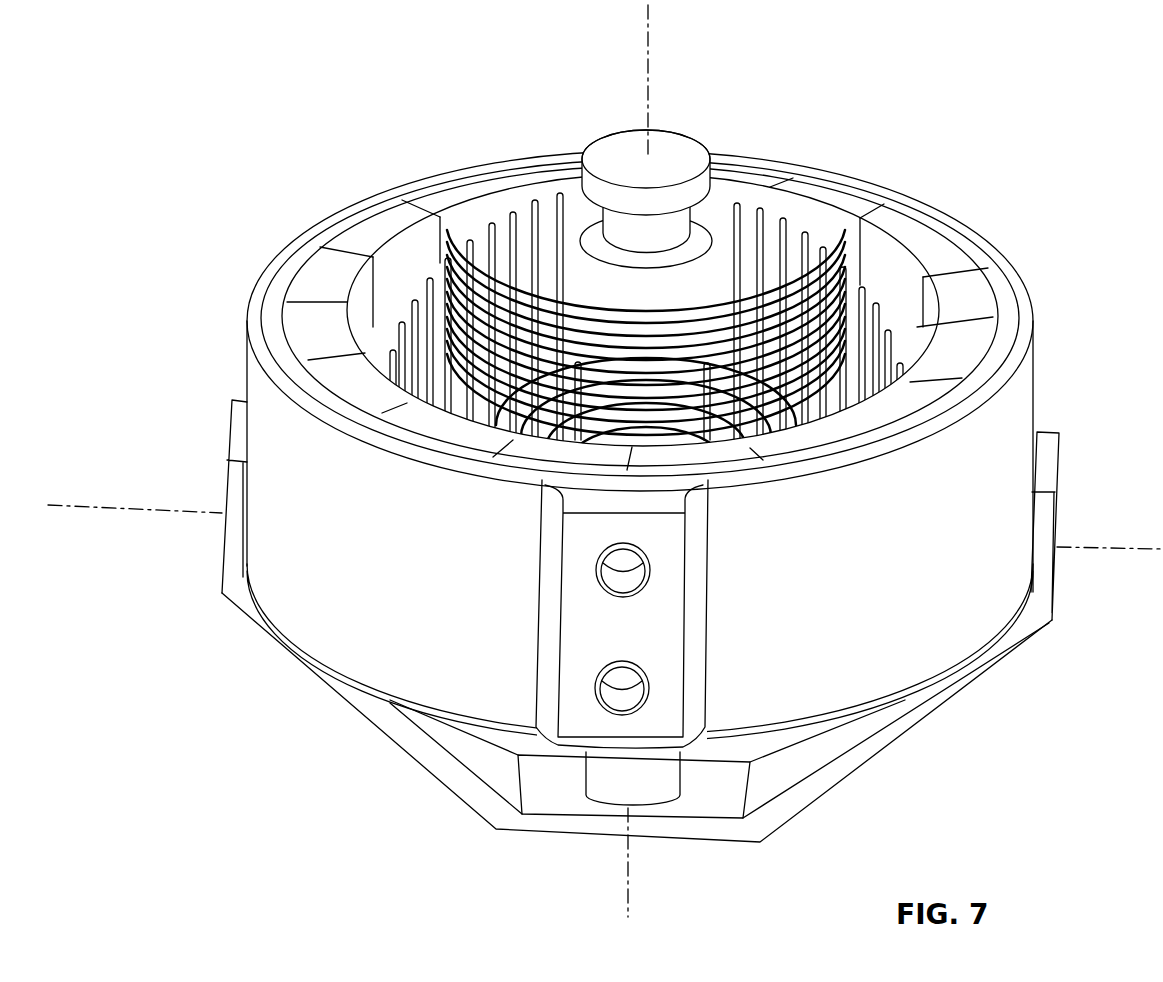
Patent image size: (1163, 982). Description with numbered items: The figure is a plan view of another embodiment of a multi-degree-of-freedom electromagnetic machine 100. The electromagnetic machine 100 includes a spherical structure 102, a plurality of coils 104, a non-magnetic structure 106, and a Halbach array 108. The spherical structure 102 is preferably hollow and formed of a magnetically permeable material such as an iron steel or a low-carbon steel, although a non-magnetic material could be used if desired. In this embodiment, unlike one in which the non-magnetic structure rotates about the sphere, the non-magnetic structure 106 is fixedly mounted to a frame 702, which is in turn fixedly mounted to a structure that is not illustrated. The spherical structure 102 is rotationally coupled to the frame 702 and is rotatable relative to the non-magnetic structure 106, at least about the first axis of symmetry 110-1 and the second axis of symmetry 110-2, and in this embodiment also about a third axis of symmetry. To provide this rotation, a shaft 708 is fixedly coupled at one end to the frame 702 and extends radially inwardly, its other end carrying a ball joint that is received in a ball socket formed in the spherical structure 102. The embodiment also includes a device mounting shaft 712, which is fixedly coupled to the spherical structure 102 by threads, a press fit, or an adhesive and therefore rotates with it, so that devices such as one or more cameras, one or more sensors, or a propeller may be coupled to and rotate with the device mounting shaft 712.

The multi-degree-of-freedom electromagnetic machine 100 is at (313, 108).
The spherical structure 102 is at (712, 233).
The coils 104 is at (834, 258).
The non-magnetic structure 106 is at (856, 170).
The Halbach array 108 is at (457, 196).
The first axis of symmetry 110-1 is at (650, 93).
The second axis of symmetry 110-2 is at (1098, 547).
The frame 702 is at (406, 742).
The shaft 708 is at (608, 778).
The device mounting shaft 712 is at (612, 153).